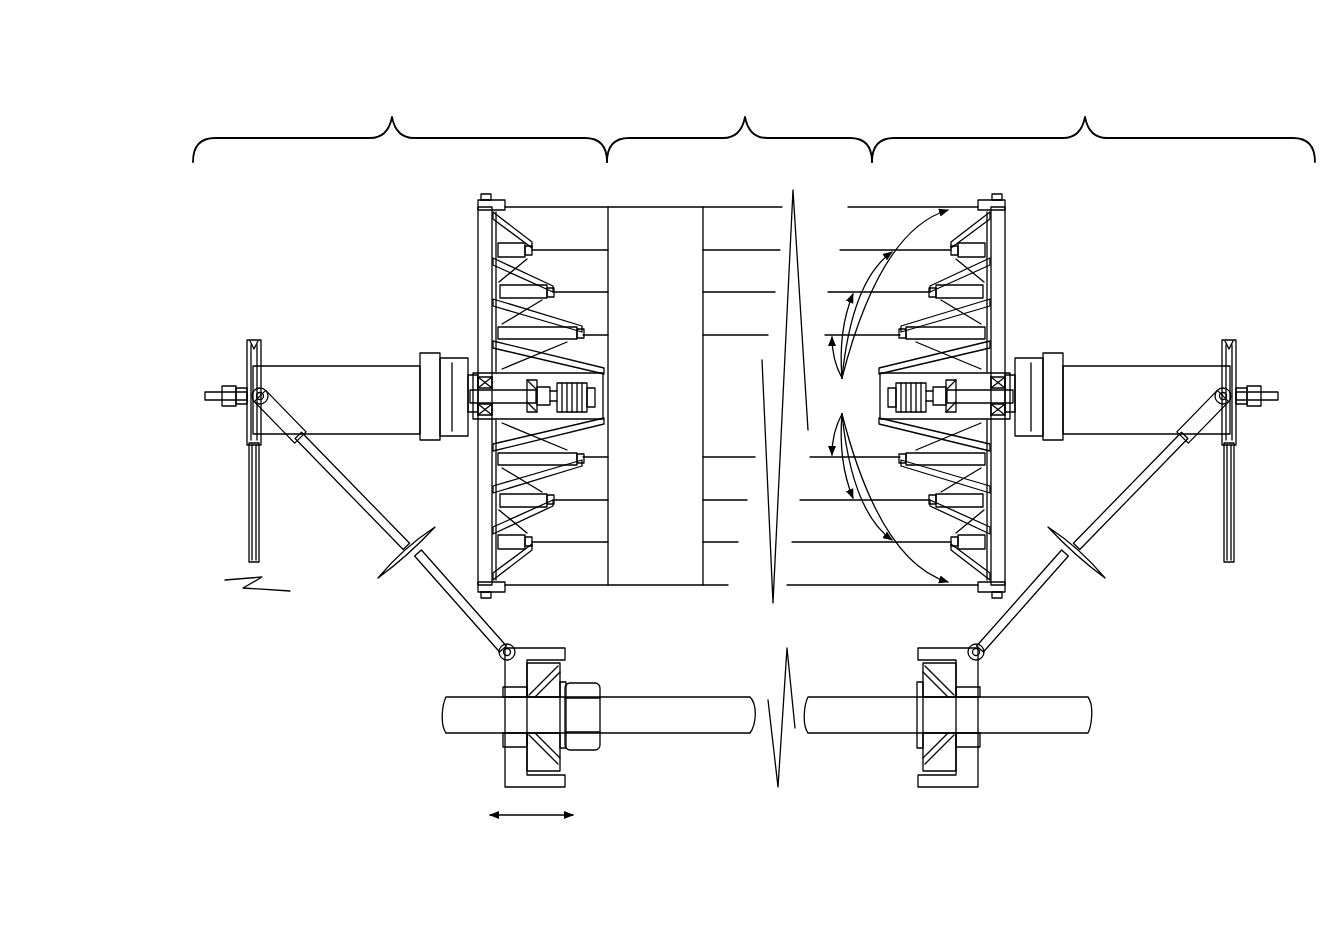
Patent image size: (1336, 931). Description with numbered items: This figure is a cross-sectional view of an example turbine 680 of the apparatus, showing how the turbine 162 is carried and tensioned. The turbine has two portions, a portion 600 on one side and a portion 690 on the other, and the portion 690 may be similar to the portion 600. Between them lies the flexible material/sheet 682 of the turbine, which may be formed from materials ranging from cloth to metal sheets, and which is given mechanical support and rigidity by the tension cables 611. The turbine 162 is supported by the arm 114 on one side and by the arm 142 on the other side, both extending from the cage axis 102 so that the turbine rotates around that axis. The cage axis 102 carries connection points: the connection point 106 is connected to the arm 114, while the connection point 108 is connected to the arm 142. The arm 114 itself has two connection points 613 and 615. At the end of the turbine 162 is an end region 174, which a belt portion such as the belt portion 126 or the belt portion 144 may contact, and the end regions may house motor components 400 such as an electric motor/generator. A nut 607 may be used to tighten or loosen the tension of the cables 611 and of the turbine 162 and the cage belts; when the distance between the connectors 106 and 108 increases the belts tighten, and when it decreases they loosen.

The turbine 680 is at (220, 82).
The portion of the turbine 600 is at (400, 127).
The turbine 162 is at (739, 127).
The portion of the turbine 690 is at (1093, 127).
The flexible material/sheet 682 is at (667, 325).
The cables 611 is at (887, 396).
The motor components 400 is at (326, 382).
The connection point 613 is at (265, 386).
The end region 174 is at (241, 416).
The belt portion 126 is at (249, 501).
The arm 114 is at (364, 513).
The connection point 615 is at (497, 651).
The connection point 106 is at (499, 764).
The nut 607 is at (595, 763).
The cage axis 102 is at (720, 726).
The arm 142 is at (1117, 517).
The belt portion 144 is at (1239, 498).
The connection point 108 is at (984, 771).